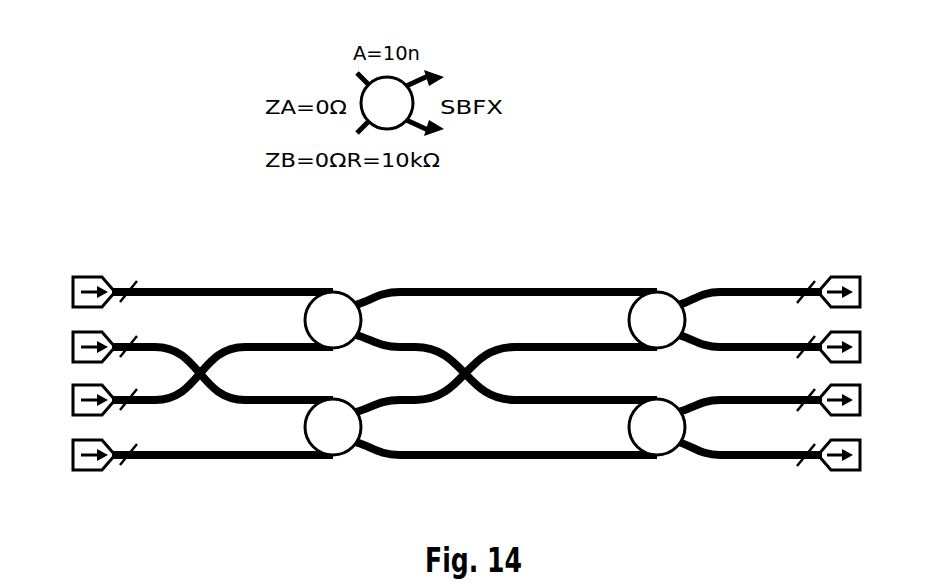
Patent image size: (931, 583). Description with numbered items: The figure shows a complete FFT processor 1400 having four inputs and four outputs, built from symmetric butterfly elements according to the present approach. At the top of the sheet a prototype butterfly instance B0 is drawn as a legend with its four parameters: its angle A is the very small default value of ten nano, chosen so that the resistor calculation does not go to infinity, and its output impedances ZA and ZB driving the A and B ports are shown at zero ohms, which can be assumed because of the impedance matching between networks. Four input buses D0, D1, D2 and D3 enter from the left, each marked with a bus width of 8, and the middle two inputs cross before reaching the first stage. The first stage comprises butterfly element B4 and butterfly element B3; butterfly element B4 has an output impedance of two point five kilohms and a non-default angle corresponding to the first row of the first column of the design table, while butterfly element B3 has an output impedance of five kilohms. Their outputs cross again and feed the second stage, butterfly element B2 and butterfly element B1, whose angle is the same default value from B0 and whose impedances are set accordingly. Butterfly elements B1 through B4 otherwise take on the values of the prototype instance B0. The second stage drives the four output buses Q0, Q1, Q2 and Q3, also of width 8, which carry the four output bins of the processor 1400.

The FFT processor 1400 is at (623, 216).
The bus width indicator 8 is at (128, 284).
The prototype butterfly instance B0 is at (400, 103).
The butterfly element B1 is at (657, 427).
The butterfly element B2 is at (657, 320).
The butterfly element B3 is at (333, 427).
The butterfly element B4 is at (333, 320).
The input data port D0 is at (69, 292).
The input data port D1 is at (69, 347).
The input data port D2 is at (69, 400).
The input data port D3 is at (69, 455).
The output data port Q0 is at (864, 292).
The output data port Q1 is at (864, 347).
The output data port Q2 is at (864, 400).
The output data port Q3 is at (864, 455).